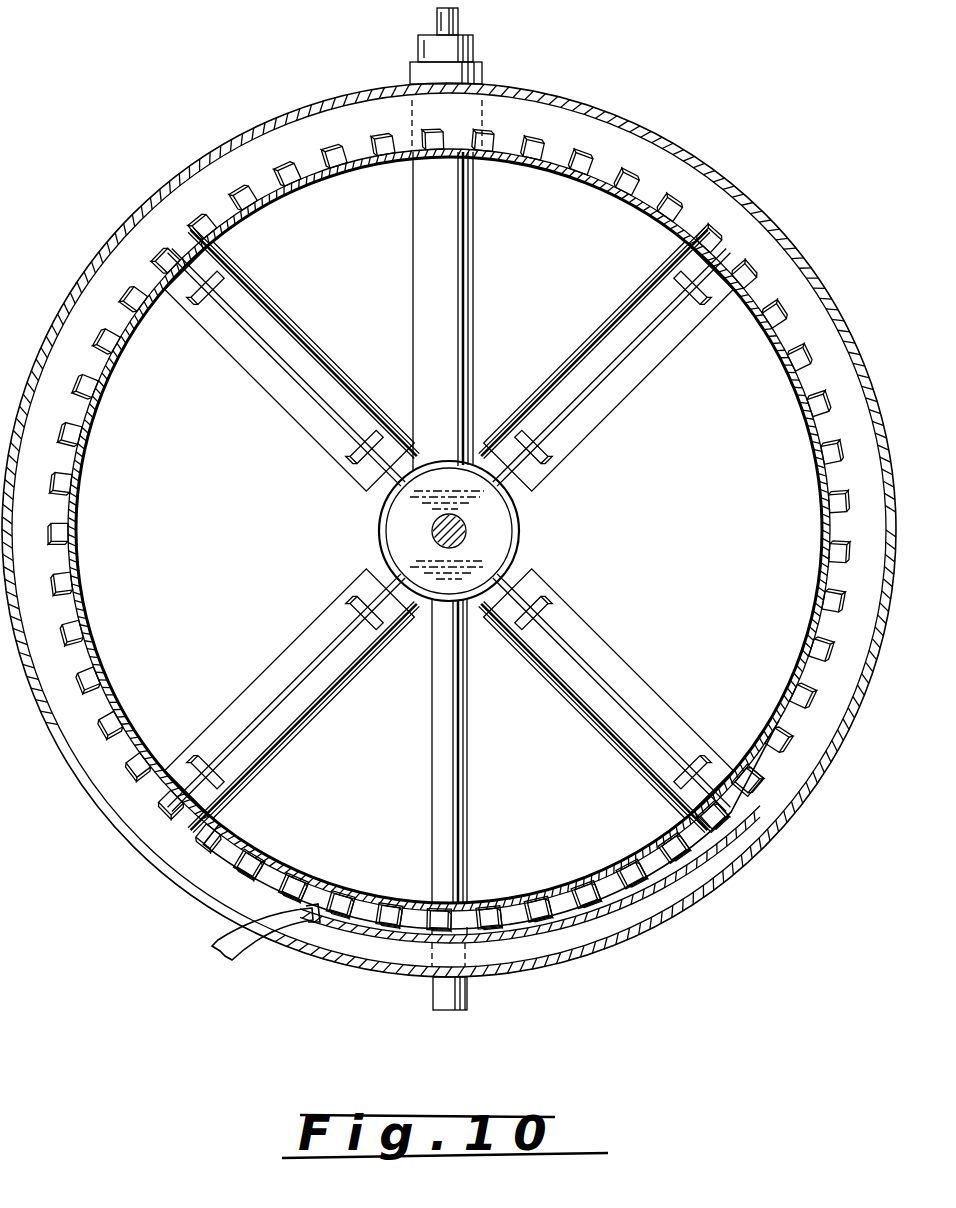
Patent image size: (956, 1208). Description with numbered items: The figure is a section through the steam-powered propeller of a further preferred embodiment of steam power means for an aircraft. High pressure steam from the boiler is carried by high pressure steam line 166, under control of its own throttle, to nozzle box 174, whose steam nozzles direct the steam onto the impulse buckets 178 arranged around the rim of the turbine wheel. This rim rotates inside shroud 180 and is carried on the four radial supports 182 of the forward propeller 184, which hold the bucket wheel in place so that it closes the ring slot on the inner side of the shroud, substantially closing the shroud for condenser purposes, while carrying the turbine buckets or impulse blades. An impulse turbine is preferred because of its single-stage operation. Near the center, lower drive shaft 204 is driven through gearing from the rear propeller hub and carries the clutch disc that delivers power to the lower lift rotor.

The high pressure steam line 166 is at (214, 943).
The nozzle box 174 is at (296, 936).
The impulse buckets 178 is at (545, 910).
The shroud 180 is at (822, 277).
The propeller blade supports 182 is at (336, 423).
The forward propeller 184 is at (232, 715).
The lower drive shaft 204 is at (476, 291).